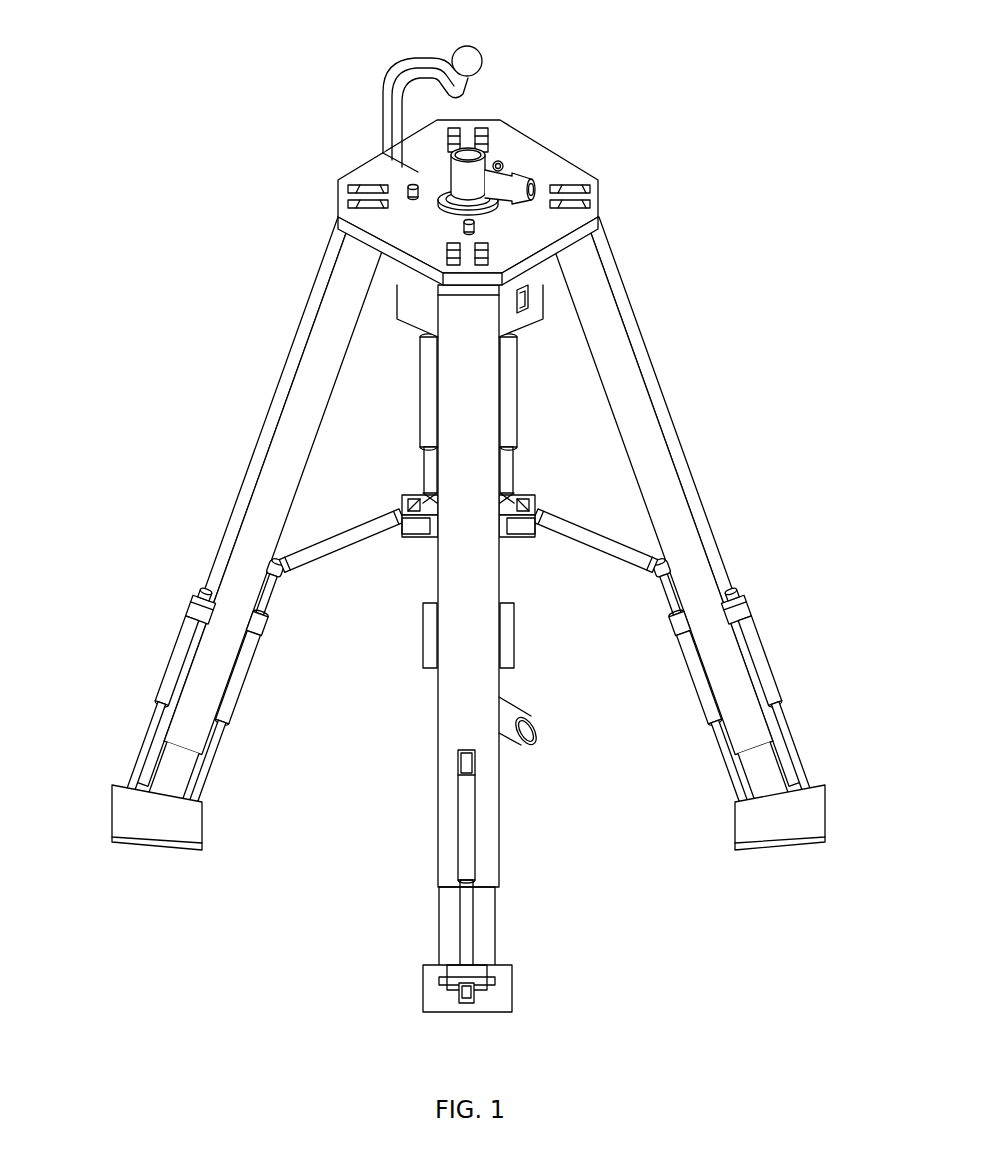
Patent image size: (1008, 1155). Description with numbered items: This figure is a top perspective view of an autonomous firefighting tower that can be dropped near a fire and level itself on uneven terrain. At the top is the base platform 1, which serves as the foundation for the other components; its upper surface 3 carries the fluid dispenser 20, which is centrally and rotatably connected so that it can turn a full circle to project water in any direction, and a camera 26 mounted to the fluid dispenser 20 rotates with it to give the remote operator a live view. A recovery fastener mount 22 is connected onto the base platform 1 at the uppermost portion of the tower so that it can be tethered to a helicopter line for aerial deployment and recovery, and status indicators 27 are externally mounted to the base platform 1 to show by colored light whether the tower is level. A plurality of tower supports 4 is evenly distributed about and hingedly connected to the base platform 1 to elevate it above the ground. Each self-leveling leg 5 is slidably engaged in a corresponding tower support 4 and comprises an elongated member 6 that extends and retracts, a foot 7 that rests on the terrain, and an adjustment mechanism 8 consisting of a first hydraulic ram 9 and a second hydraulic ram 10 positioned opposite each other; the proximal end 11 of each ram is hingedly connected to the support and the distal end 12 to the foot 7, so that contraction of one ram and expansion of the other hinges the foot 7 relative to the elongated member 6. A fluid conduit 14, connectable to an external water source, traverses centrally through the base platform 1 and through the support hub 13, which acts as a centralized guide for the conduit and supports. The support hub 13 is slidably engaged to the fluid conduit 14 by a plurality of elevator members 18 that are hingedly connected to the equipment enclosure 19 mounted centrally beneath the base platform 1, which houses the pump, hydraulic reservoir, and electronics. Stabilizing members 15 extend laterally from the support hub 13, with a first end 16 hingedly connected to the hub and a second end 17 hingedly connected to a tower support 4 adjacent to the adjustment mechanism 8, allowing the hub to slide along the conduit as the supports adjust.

The base platform 1 is at (372, 157).
The upper surface 3 is at (410, 229).
The tower supports 4 is at (257, 481).
The self-leveling legs 5 is at (465, 679).
The elongated member 6 is at (194, 791).
The foot 7 is at (119, 828).
The adjustment mechanism 8 is at (256, 729).
The first hydraulic ram 9 is at (250, 652).
The second hydraulic ram 10 is at (161, 693).
The proximal end 11 is at (184, 622).
The distal end 12 is at (128, 788).
The support hub 13 is at (535, 498).
The fluid conduit 14 is at (516, 718).
The stabilizing members 15 is at (353, 537).
The first end 16 is at (391, 524).
The second end 17 is at (288, 569).
The elevator members 18 is at (427, 433).
The equipment enclosure 19 is at (407, 320).
The fluid dispenser 20 is at (518, 193).
The recovery fastener mount 22 is at (470, 50).
The camera 26 is at (505, 166).
The status indicator 27 is at (414, 185).